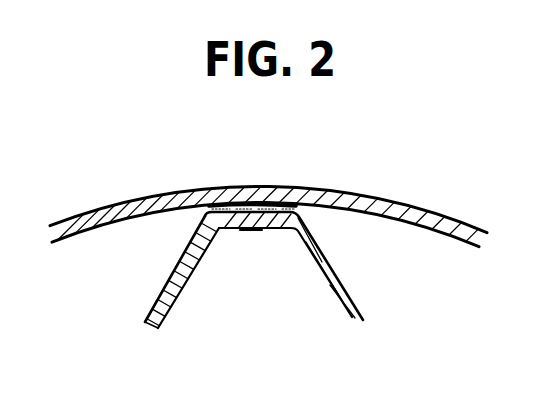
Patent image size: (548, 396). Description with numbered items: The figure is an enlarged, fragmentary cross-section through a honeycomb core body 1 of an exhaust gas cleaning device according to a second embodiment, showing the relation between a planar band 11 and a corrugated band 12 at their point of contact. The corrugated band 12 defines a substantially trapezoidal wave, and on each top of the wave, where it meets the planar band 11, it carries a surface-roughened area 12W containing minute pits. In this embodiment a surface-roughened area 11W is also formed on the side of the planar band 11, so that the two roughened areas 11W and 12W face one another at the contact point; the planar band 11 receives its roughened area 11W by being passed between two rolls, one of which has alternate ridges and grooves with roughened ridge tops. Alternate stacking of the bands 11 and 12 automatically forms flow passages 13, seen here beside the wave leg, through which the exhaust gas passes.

The honeycomb core body 1 is at (104, 170).
The planar band 11 is at (412, 208).
The surface-roughened area 11W is at (284, 200).
The corrugated band 12 is at (352, 291).
The surface-roughened area 12W is at (258, 229).
The flow passage 13 is at (193, 300).